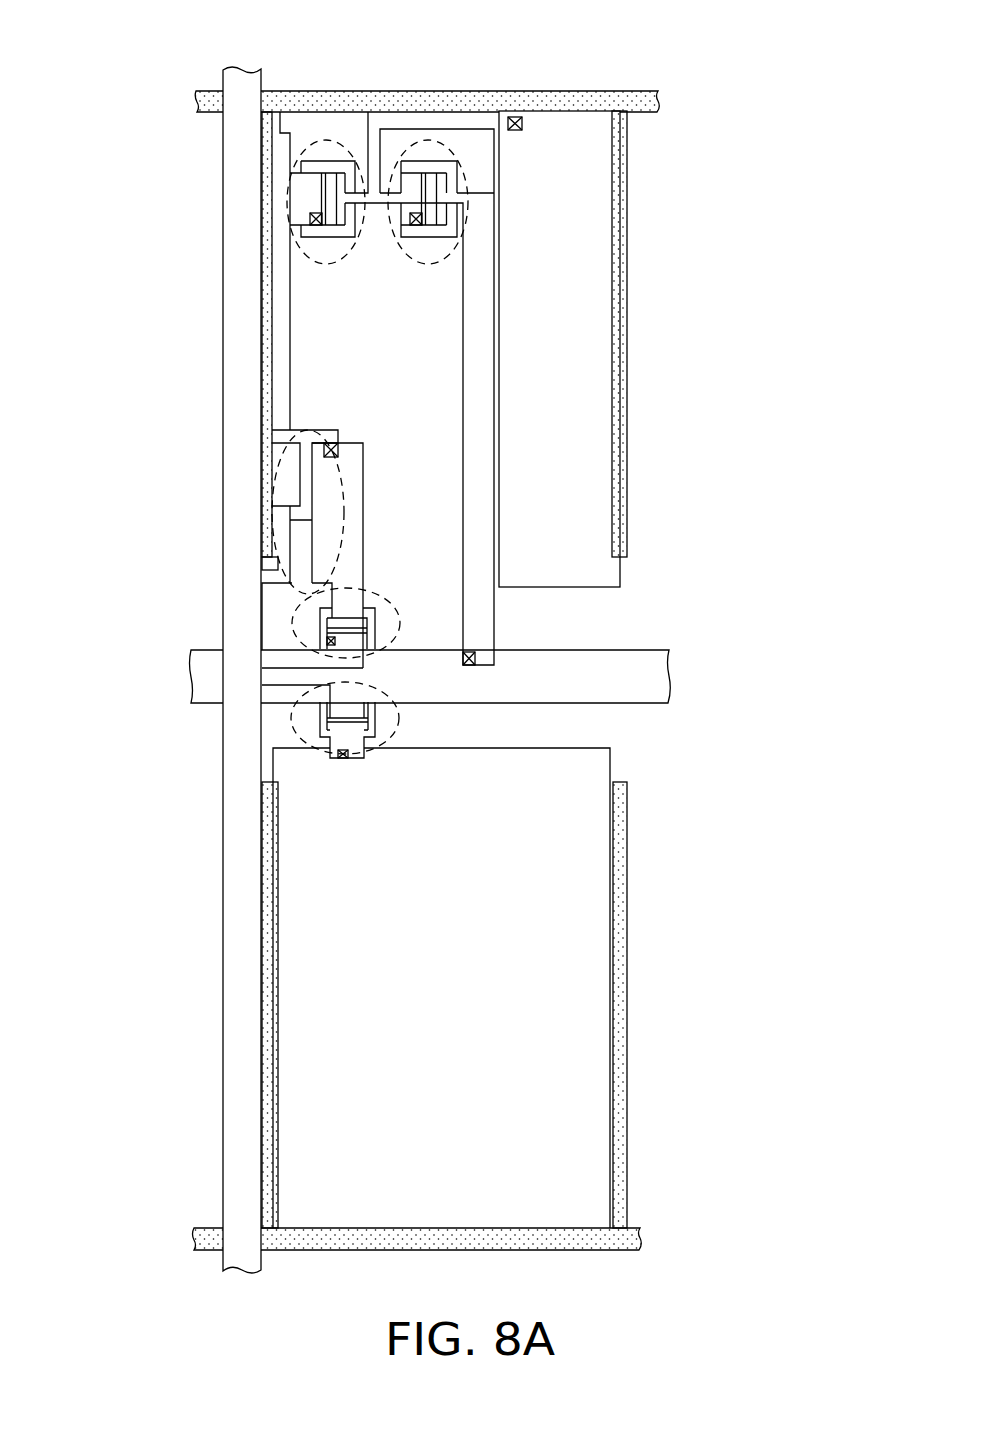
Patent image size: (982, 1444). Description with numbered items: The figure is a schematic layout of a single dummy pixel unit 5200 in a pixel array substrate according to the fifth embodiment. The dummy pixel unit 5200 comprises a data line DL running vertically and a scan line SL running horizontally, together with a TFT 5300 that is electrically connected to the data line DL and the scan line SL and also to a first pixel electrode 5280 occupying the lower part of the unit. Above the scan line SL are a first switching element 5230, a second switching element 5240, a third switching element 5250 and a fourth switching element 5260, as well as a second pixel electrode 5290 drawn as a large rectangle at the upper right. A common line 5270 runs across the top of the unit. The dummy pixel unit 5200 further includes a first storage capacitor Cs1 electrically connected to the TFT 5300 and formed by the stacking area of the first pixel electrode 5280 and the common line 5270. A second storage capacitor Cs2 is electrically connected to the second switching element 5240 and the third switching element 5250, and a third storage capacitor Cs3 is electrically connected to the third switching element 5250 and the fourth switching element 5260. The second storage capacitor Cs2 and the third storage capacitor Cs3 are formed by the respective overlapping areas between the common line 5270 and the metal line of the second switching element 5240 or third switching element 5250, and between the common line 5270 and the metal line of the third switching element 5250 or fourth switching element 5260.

The dummy pixel unit 5200 is at (435, 639).
The common line 5270 is at (393, 90).
The fourth switching element 5260 is at (467, 195).
The third switching element 5250 is at (268, 212).
The second pixel electrode 5290 is at (603, 297).
The second switching element 5240 is at (268, 496).
The first switching element 5230 is at (320, 637).
The TFT 5300 is at (300, 715).
The first pixel electrode 5280 is at (590, 1058).
The scan line SL is at (610, 673).
The data line DL is at (238, 940).
The first storage capacitor Cs1 is at (266, 1086).
The second storage capacitor Cs2 is at (258, 328).
The third storage capacitor Cs3 is at (636, 392).